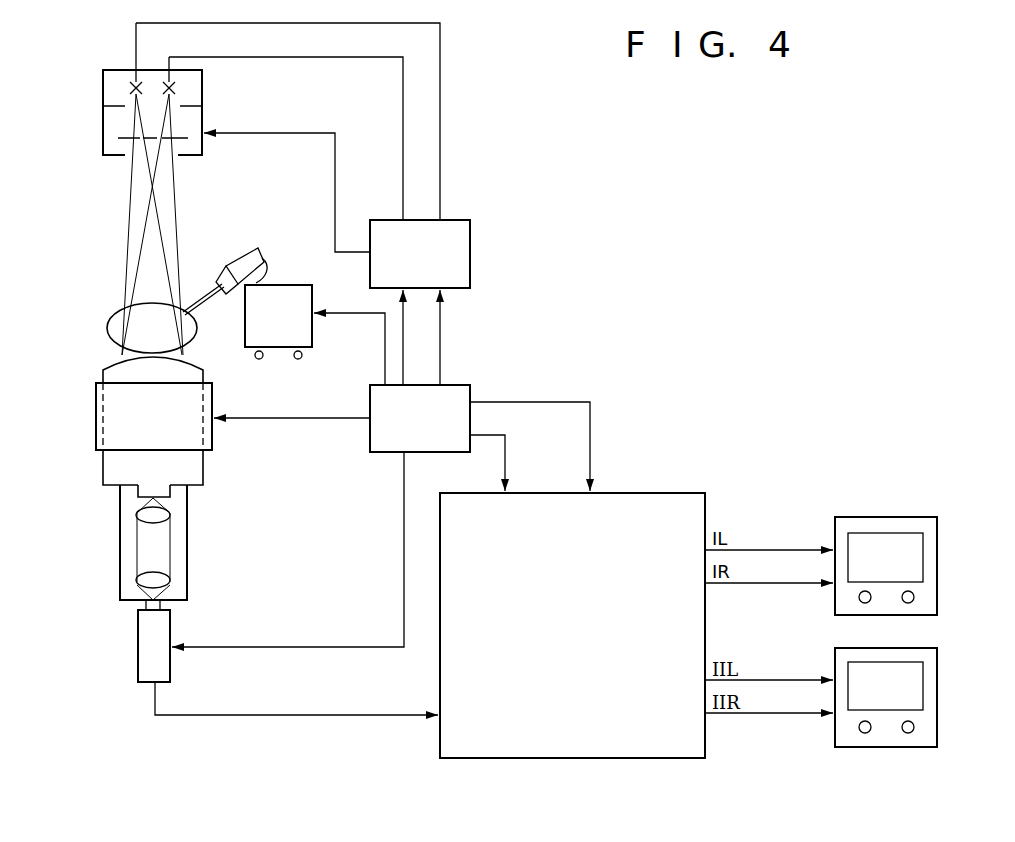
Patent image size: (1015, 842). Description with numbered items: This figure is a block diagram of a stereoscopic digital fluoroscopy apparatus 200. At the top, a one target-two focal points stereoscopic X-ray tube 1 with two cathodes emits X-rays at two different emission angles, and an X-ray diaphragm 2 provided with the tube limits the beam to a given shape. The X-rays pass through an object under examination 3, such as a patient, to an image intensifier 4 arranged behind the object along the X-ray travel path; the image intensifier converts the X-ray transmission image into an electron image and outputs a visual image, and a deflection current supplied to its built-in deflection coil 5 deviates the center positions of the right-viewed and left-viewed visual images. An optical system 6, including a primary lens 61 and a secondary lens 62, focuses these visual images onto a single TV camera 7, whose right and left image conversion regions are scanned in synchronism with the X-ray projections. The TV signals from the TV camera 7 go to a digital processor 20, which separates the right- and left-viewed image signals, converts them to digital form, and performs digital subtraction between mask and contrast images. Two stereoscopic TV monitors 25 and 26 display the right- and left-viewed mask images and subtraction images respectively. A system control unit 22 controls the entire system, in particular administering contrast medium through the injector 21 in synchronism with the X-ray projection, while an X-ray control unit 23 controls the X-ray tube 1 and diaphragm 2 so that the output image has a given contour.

The stereoscopic X-ray tube 1 is at (102, 90).
The X-ray diaphragm 2 is at (102, 138).
The object under examination 3 is at (108, 326).
The image intensifier 4 is at (103, 376).
The deflection coil 5 is at (96, 422).
The optical system 6 is at (120, 550).
The primary lens 61 is at (172, 512).
The secondary lens 62 is at (172, 580).
The TV camera 7 is at (138, 638).
The digital processor 20 is at (440, 738).
The injector for X-ray contrast medium 21 is at (313, 333).
The system control unit 22 is at (464, 385).
The X-ray control unit 23 is at (472, 226).
The stereoscopic TV monitor 25 is at (852, 517).
The stereoscopic TV monitor 26 is at (937, 680).
The digital fluoroscopy apparatus 200 is at (673, 216).